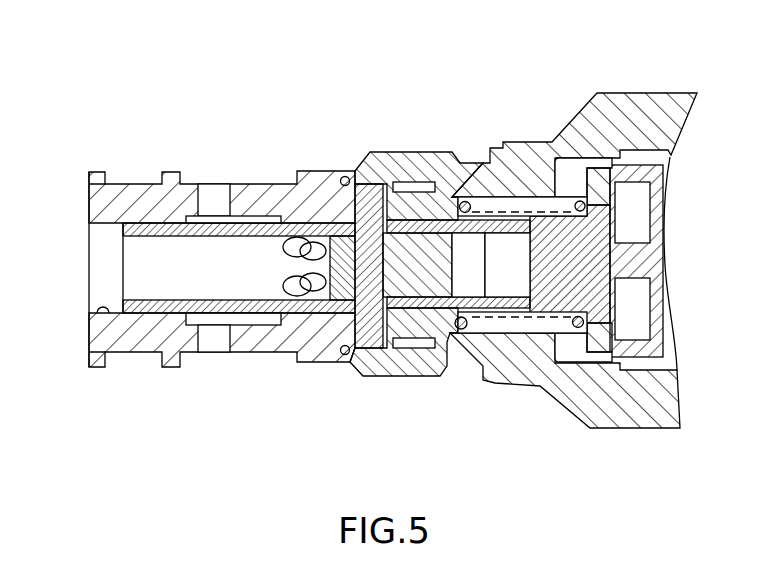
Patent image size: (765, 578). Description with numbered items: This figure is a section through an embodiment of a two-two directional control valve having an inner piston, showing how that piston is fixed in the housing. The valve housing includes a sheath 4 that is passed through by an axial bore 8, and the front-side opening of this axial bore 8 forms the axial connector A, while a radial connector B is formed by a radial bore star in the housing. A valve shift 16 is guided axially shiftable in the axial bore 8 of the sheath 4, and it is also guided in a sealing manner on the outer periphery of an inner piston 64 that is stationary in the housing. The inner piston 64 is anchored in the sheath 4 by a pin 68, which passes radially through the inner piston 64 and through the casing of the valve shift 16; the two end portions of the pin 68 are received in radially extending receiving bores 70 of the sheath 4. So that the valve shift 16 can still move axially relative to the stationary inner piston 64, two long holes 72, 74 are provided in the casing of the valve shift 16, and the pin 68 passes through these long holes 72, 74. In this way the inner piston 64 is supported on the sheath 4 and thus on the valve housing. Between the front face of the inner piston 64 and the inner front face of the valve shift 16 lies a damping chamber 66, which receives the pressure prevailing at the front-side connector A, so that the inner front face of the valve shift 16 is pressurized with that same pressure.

The sheath 4 is at (253, 198).
The axial bore 8 is at (113, 356).
The valve shift 16 is at (553, 236).
The inner piston 64 is at (456, 310).
The damping chamber 66 is at (494, 272).
The pin 68 is at (363, 178).
The receiving bores 70 is at (358, 170).
The long hole 72 is at (432, 300).
The long hole 74 is at (427, 160).
The connector A is at (107, 268).
The radial connector B is at (211, 356).